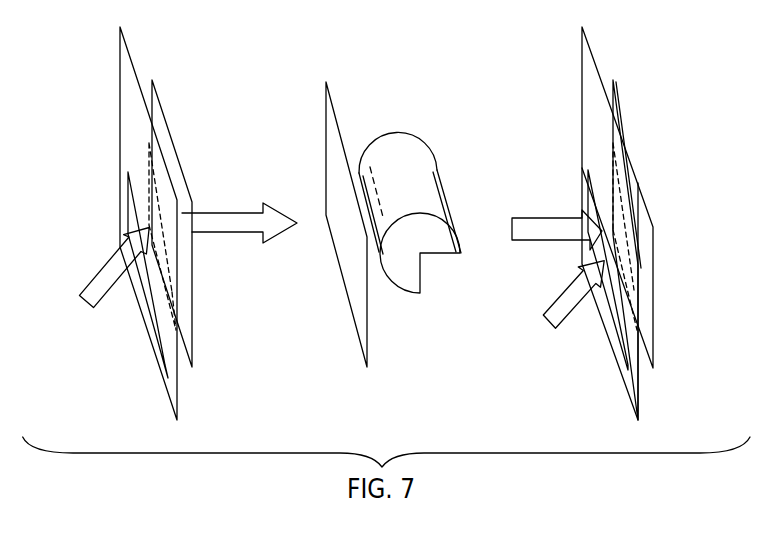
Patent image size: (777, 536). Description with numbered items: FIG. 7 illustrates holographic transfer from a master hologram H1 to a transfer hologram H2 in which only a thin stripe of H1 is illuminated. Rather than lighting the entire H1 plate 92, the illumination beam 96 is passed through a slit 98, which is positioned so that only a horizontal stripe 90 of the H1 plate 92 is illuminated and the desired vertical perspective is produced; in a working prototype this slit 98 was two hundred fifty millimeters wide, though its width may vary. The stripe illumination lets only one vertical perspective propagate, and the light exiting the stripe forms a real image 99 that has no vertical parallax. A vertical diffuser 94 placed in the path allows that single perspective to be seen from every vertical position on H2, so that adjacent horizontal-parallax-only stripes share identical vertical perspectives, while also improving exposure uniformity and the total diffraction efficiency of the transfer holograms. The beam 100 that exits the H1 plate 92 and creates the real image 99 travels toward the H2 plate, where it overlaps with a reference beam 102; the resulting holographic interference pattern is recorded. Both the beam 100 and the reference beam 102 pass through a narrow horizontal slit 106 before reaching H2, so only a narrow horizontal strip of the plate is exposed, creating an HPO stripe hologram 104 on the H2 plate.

The horizontal stripe 90 is at (190, 332).
The H1 plate 92 is at (175, 105).
The diffuser 94 is at (335, 153).
The illumination beam 96 is at (103, 277).
The slit 98 is at (132, 203).
The real image 99 is at (413, 163).
The beam 100 is at (228, 225).
The reference beam 102 is at (553, 300).
The HPO stripe hologram 104 is at (652, 332).
The narrow horizontal slit 106 is at (592, 207).